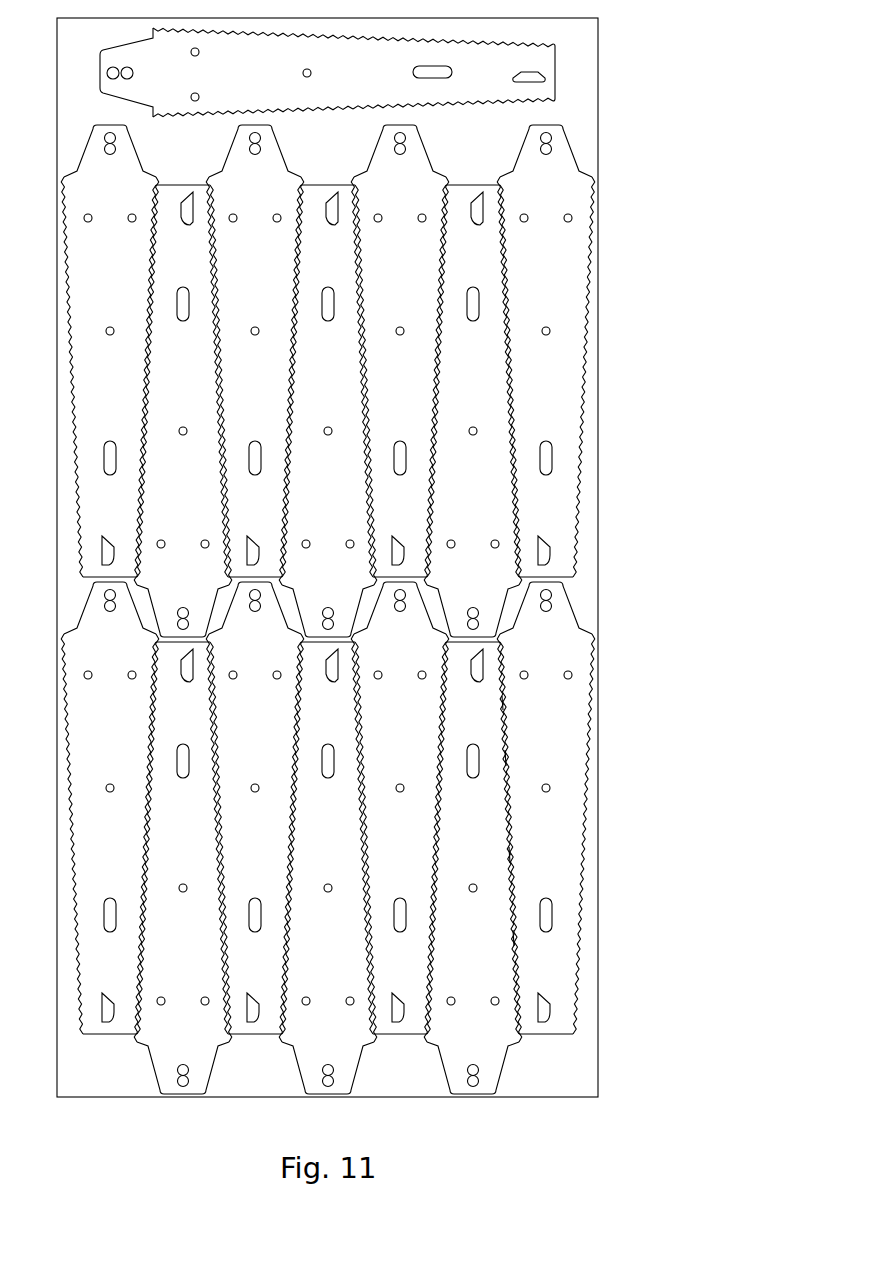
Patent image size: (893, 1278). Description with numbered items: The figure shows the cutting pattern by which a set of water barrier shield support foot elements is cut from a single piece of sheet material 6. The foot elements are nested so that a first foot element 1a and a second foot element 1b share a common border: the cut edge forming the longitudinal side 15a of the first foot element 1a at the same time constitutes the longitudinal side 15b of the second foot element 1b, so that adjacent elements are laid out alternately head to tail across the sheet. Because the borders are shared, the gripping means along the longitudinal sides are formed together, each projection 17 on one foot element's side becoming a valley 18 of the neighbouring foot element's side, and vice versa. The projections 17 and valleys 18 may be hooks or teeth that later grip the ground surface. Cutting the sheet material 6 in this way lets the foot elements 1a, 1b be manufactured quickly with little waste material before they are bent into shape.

The sheet material 6 is at (575, 120).
The first foot element 1a is at (545, 992).
The second foot element 1b is at (455, 1030).
The projections 17 is at (507, 758).
The valleys 18 is at (500, 703).
The longitudinal side of the first foot element 15a is at (513, 938).
The longitudinal side of the second foot element 15b is at (508, 855).